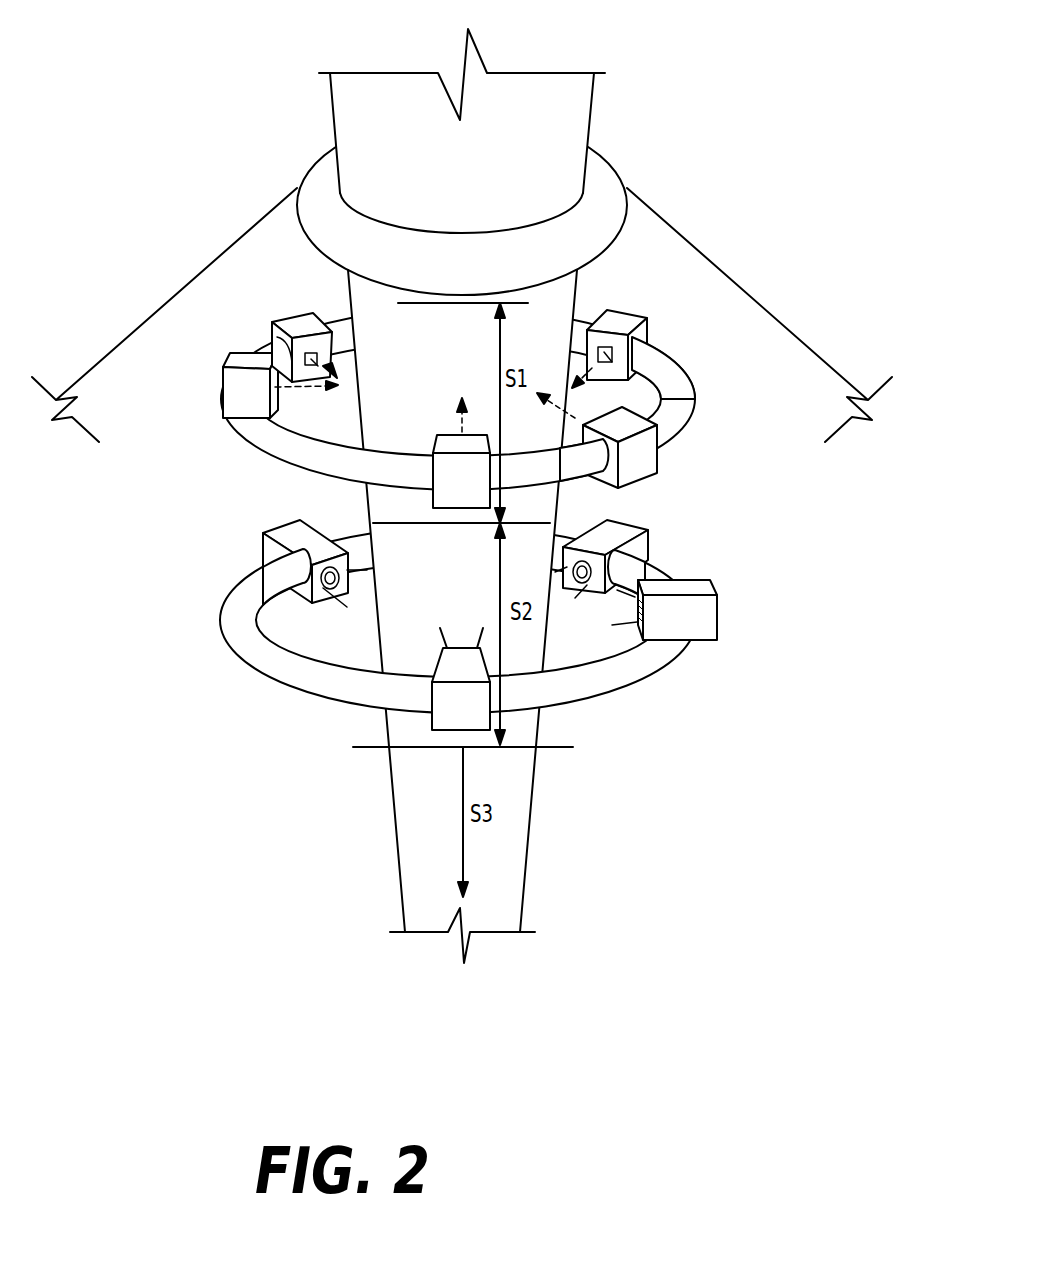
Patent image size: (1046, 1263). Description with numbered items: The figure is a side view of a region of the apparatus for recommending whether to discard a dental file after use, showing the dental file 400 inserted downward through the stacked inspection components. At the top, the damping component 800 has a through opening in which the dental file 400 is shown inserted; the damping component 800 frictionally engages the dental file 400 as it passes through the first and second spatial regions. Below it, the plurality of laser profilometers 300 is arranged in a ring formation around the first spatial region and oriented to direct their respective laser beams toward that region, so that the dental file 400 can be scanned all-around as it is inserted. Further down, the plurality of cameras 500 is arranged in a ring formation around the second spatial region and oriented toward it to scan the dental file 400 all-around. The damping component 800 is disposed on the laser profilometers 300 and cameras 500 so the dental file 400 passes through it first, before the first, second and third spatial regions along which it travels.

The dental file 400 is at (592, 112).
The damping component 800 is at (620, 233).
The plurality of laser profilometers 300 is at (625, 312).
The plurality of cameras 500 is at (680, 591).